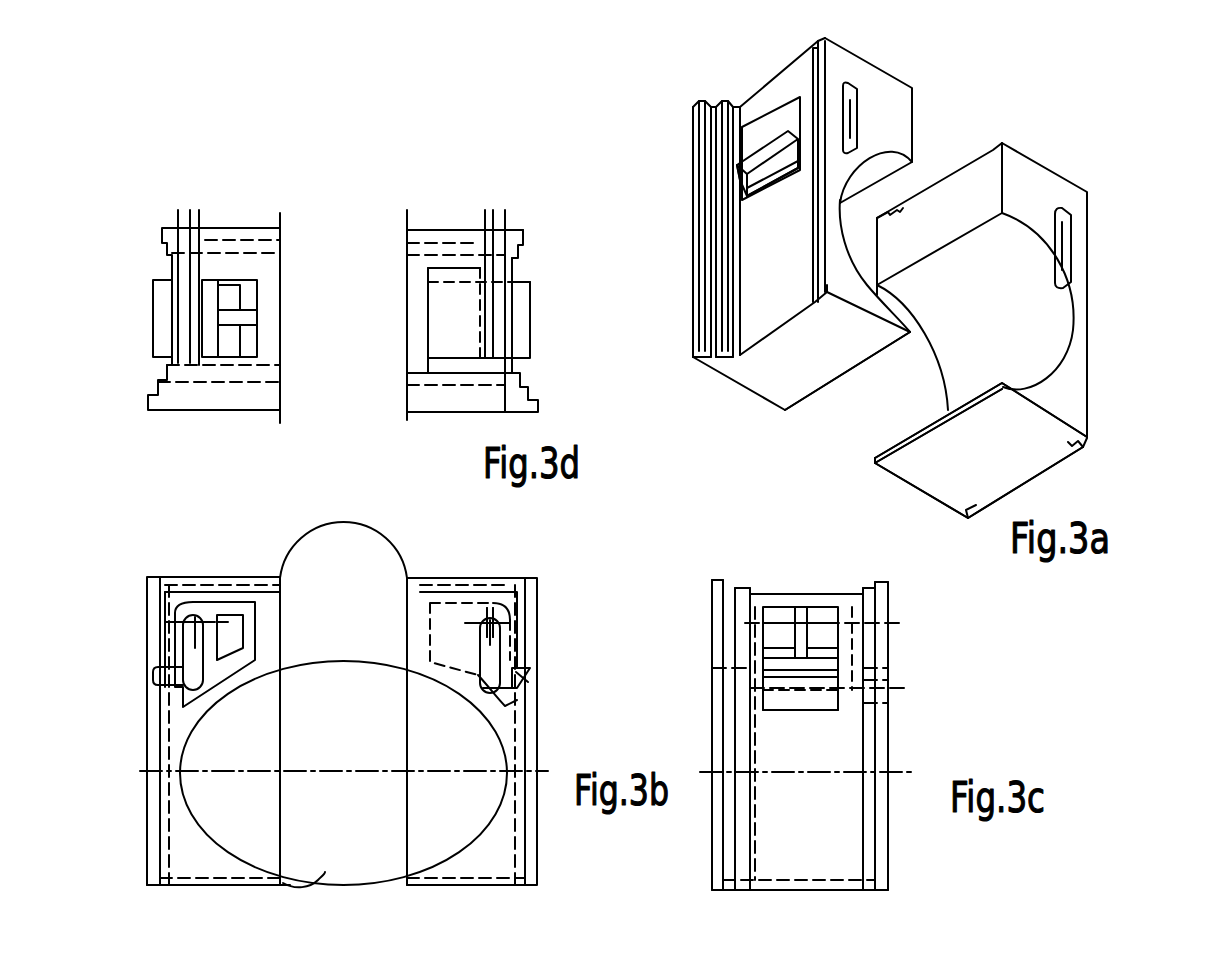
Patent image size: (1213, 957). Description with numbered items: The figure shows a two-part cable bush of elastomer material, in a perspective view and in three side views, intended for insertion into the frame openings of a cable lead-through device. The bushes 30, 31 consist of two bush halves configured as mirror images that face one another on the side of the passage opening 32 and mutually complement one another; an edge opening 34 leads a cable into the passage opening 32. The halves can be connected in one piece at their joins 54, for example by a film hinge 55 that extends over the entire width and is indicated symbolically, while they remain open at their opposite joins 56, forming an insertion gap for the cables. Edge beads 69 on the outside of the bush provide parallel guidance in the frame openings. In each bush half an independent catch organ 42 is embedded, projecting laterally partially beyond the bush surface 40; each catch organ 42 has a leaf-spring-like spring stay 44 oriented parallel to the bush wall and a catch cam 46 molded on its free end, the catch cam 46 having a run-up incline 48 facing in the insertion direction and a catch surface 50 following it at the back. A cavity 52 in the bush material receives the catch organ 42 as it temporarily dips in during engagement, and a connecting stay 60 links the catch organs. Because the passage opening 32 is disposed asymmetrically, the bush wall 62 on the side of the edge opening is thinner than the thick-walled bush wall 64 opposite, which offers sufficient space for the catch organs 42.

In FIG. 3A, the bush 30 is at (1030, 178).
In FIG. 3B, the bush 30 is at (473, 583).
In FIG. 3C, the bush 30 is at (894, 622).
In FIG. 3D, the bush 31 is at (430, 240).
In FIG. 3A, the bush 31 is at (843, 68).
In FIG. 3B, the bush 31 is at (228, 588).
In FIG. 3A, the passage opening 32 is at (992, 283).
In FIG. 3B, the passage opening 32 is at (455, 788).
In FIG. 3A, the edge opening 34 is at (847, 387).
In FIG. 3B, the edge opening 34 is at (313, 869).
In FIG. 3D, the bush surface 40 is at (514, 262).
In FIG. 3D, the catch organ 42 is at (525, 317).
In FIG. 3A, the catch organ 42 is at (765, 157).
In FIG. 3B, the catch organ 42 is at (500, 630).
In FIG. 3C, the catch organ 42 is at (818, 688).
In FIG. 3D, the spring stay 44 is at (516, 328).
In FIG. 3A, the spring stay 44 is at (787, 122).
In FIG. 3B, the spring stay 44 is at (506, 626).
In FIG. 3C, the spring stay 44 is at (800, 637).
In FIG. 3D, the catch cam 46 is at (523, 293).
In FIG. 3A, the catch cam 46 is at (758, 175).
In FIG. 3B, the catch cam 46 is at (530, 672).
In FIG. 3C, the catch cam 46 is at (780, 687).
In FIG. 3A, the run-up incline 48 is at (740, 165).
In FIG. 3B, the run-up incline 48 is at (530, 685).
In FIG. 3B, the catch surface 50 is at (525, 665).
In FIG. 3A, the cavity 52 is at (851, 112).
In FIG. 3B, the cavity 52 is at (190, 660).
In FIG. 3B, the join 54 is at (407, 597).
In FIG. 3B, the film hinge 55 is at (341, 512).
In FIG. 3B, the join 56 is at (283, 882).
In FIG. 3D, the connecting stay 60 is at (152, 395).
In FIG. 3A, the bush wall 62 is at (1010, 397).
In FIG. 3B, the bush wall 62 is at (247, 880).
In FIG. 3A, the bush wall 64 is at (1013, 167).
In FIG. 3B, the bush wall 64 is at (268, 602).
In FIG. 3A, the edge bead 69 is at (708, 247).
In FIG. 3C, the edge bead 69 is at (733, 598).